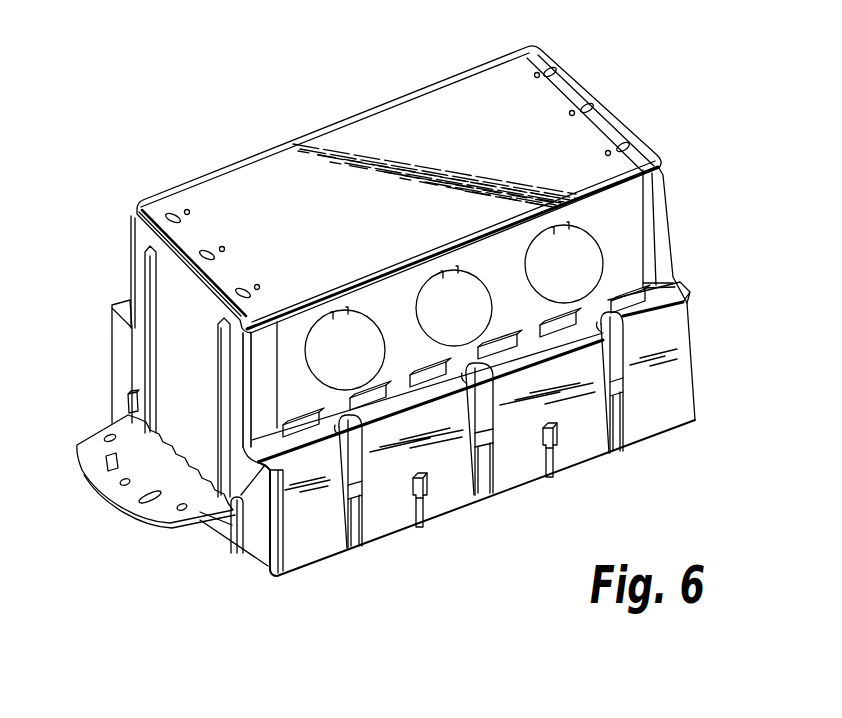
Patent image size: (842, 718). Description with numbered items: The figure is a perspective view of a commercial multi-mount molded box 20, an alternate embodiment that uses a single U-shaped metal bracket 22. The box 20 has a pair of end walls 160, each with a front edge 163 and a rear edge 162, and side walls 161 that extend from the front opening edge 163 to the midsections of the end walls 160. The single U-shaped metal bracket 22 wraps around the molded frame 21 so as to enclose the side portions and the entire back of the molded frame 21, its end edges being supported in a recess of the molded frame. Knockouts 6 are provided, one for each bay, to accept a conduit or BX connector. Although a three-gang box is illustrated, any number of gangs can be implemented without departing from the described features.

The commercial molded box 20 is at (404, 317).
The U-shaped metal bracket 22 is at (447, 120).
The molded frame 21 is at (509, 454).
The end walls 160 is at (670, 207).
The side walls 161 is at (517, 475).
The rear edges 162 is at (153, 212).
The front edges 163 is at (660, 435).
The knockout 6 is at (355, 342).